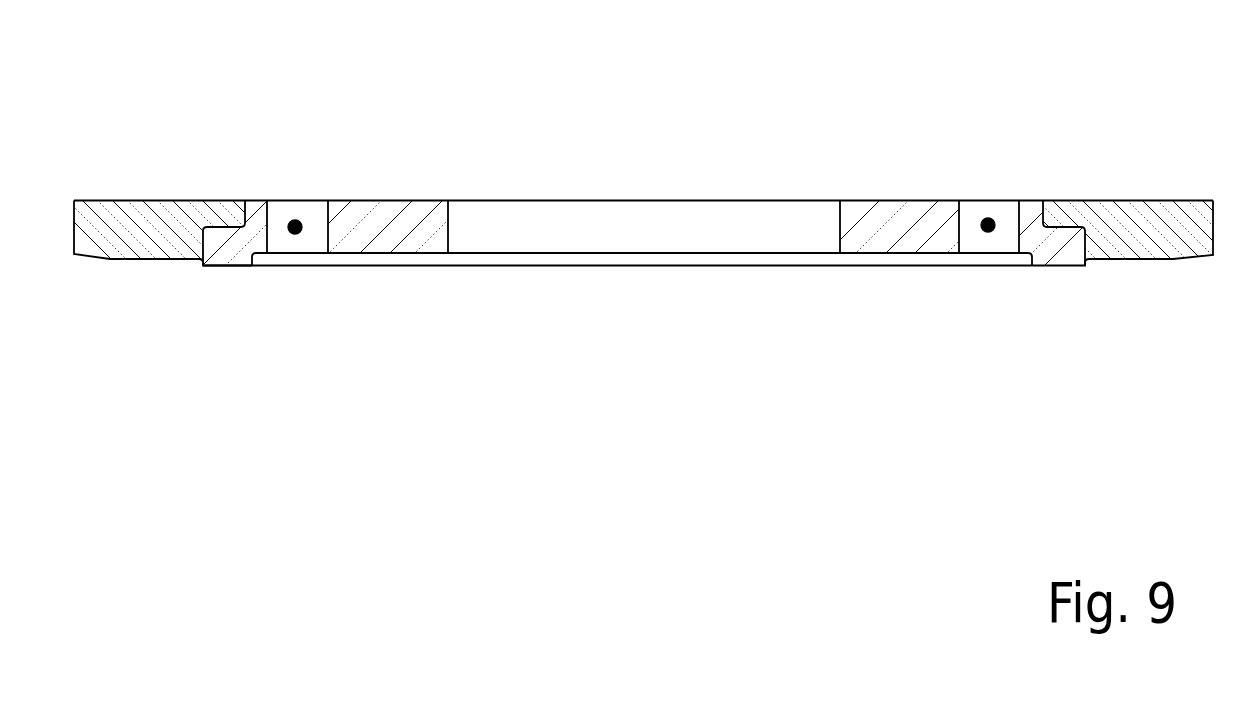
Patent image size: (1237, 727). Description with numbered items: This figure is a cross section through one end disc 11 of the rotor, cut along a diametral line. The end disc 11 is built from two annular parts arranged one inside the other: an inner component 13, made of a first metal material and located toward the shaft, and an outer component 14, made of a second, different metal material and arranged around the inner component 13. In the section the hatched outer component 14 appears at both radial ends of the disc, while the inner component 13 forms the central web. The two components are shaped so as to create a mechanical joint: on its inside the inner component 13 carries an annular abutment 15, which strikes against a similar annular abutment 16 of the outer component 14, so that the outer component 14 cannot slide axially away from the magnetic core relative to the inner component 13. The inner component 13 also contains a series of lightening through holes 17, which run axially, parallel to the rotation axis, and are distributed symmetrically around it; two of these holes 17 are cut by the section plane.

The end disc 11 is at (424, 461).
The inner component 13 is at (867, 323).
The outer component 14 is at (159, 146).
The annular abutment 15 is at (225, 263).
The annular abutment 16 is at (230, 210).
The lightening through holes 17 is at (295, 222).